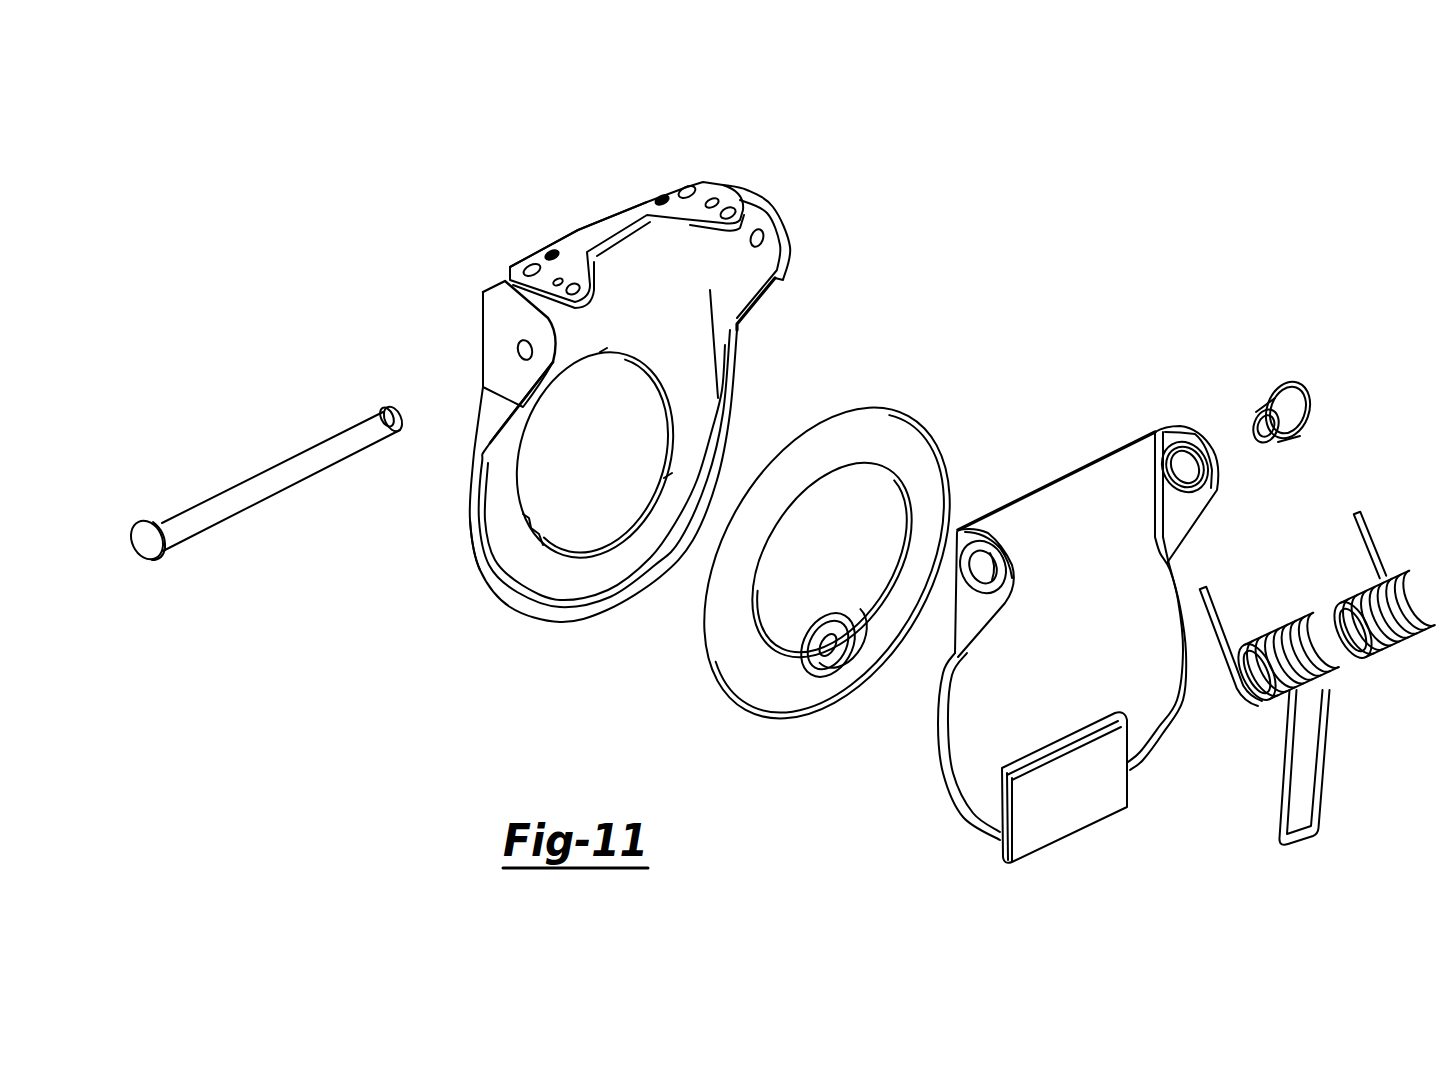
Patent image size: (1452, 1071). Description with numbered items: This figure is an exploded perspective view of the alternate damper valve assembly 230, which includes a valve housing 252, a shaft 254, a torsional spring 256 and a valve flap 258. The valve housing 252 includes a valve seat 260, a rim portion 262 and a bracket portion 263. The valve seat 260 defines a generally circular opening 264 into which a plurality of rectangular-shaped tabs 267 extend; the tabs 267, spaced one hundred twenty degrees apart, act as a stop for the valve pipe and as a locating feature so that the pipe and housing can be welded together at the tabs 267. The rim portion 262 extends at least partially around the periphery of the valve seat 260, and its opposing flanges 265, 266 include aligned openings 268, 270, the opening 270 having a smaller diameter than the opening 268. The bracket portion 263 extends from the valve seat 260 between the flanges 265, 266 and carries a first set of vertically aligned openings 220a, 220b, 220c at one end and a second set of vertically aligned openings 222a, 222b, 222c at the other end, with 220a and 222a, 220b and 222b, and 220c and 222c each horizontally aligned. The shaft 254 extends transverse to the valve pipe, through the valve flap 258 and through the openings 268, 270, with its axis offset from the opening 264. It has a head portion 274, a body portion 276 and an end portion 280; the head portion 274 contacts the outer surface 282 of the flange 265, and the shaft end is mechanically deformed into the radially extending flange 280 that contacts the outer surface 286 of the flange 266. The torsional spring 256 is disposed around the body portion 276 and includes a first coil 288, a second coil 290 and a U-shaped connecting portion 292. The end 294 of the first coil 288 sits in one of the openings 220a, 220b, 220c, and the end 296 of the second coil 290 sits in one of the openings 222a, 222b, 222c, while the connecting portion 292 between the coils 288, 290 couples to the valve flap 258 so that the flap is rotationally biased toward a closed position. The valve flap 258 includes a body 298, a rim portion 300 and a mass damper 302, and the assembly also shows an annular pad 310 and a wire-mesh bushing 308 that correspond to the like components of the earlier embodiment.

The damper valve assembly 230 is at (1078, 187).
The valve housing 252 is at (611, 370).
The shaft 254 is at (260, 465).
The torsional spring 256 is at (1324, 636).
The valve flap 258 is at (1103, 637).
The valve seat 260 is at (518, 478).
The rim portion 262 is at (480, 462).
The bracket portion 263 is at (593, 232).
The opening 264 is at (598, 558).
The flange 265 is at (500, 322).
The flange 266 is at (745, 190).
The tabs 267 is at (670, 467).
The opening 268 is at (528, 350).
The opening 270 is at (758, 243).
The head portion 274 is at (155, 530).
The body portion 276 is at (232, 512).
The end portion 280 is at (388, 410).
The outer surface 282 is at (497, 345).
The outer surface 286 is at (772, 185).
The first coil 288 is at (1270, 705).
The second coil 290 is at (1426, 628).
The connecting portion 292 is at (1300, 786).
The end 294 is at (1205, 605).
The end 296 is at (1357, 514).
The body 298 is at (1127, 592).
The rim portion 300 is at (1162, 727).
The mass damper 302 is at (1072, 849).
The wire-mesh bushing 308 is at (820, 685).
The annular pad 310 is at (828, 555).
The first opening 220a is at (534, 266).
The second opening 220b is at (560, 282).
The third opening 220c is at (575, 289).
The first opening 222a is at (687, 190).
The second opening 222b is at (712, 200).
The third opening 222c is at (730, 216).